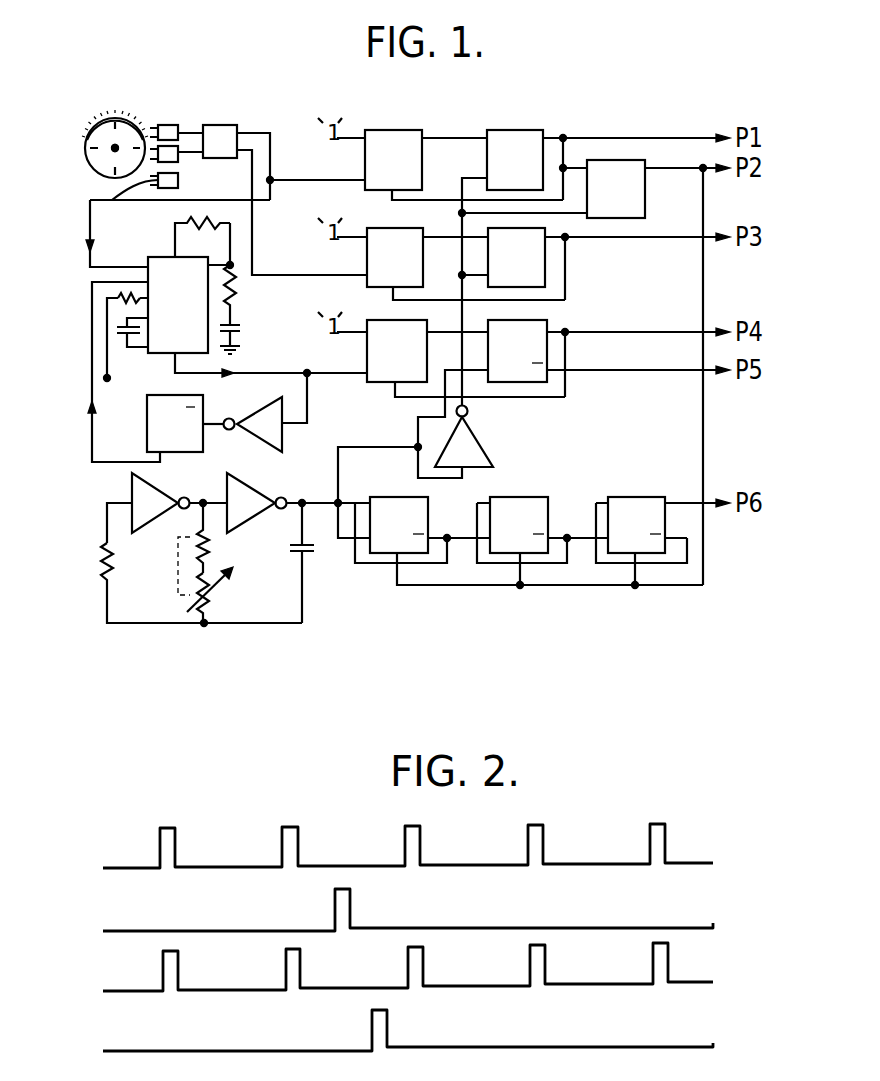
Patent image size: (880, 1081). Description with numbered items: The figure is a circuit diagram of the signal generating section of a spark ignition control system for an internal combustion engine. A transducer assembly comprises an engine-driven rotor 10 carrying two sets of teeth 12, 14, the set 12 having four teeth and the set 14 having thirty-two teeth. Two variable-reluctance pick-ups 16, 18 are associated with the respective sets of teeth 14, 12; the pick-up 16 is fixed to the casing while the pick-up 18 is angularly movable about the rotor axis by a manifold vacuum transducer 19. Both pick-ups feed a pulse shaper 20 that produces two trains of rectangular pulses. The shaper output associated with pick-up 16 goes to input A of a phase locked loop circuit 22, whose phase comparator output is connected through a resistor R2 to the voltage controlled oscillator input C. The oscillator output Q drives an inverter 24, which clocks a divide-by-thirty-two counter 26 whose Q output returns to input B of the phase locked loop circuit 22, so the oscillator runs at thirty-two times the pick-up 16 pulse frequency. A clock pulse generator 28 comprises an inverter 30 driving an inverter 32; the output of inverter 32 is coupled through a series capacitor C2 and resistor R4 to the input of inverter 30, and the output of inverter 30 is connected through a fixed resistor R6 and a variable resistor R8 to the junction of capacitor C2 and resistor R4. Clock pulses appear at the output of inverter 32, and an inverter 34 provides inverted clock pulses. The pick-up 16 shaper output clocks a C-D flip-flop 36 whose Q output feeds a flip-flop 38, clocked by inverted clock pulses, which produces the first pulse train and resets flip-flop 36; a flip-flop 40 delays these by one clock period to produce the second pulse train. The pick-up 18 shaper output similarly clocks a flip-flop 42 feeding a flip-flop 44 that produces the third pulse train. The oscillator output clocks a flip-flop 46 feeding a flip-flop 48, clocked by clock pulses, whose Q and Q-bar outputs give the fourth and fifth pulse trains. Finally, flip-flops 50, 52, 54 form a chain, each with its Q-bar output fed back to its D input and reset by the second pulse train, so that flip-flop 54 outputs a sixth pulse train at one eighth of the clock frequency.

The rotor 10 is at (93, 170).
The set of teeth 12 is at (85, 148).
The set of teeth 14 is at (98, 115).
The variable-reluctance pick-up 16 is at (168, 125).
The variable-reluctance pick-up 18 is at (177, 157).
The manifold vacuum transducer 19 is at (178, 223).
The pulse shaper 20 is at (232, 125).
The phase locked loop circuit 22 is at (158, 343).
The inverter 24 is at (272, 448).
The divide-by-32 counter 26 is at (180, 443).
The clock pulse generator 28 is at (214, 564).
The inverter 30 is at (132, 487).
The inverter 32 is at (247, 507).
The inverter 34 is at (477, 433).
The C-D flip-flop 36 is at (365, 157).
The C-D flip-flop 38 is at (487, 160).
The C-D flip-flop 40 is at (647, 198).
The C-D flip-flop 42 is at (367, 260).
The C-D flip-flop 44 is at (545, 267).
The C-D flip-flop 46 is at (367, 350).
The C-D flip-flop 48 is at (550, 348).
The C-D flip-flop 50 is at (402, 497).
The C-D flip-flop 52 is at (518, 497).
The C-D flip-flop 54 is at (632, 497).
The resistor R2 is at (181, 210).
The resistor R4 is at (102, 557).
The fixed resistor R6 is at (203, 530).
The variable resistor R8 is at (197, 597).
The capacitor C2 is at (308, 548).